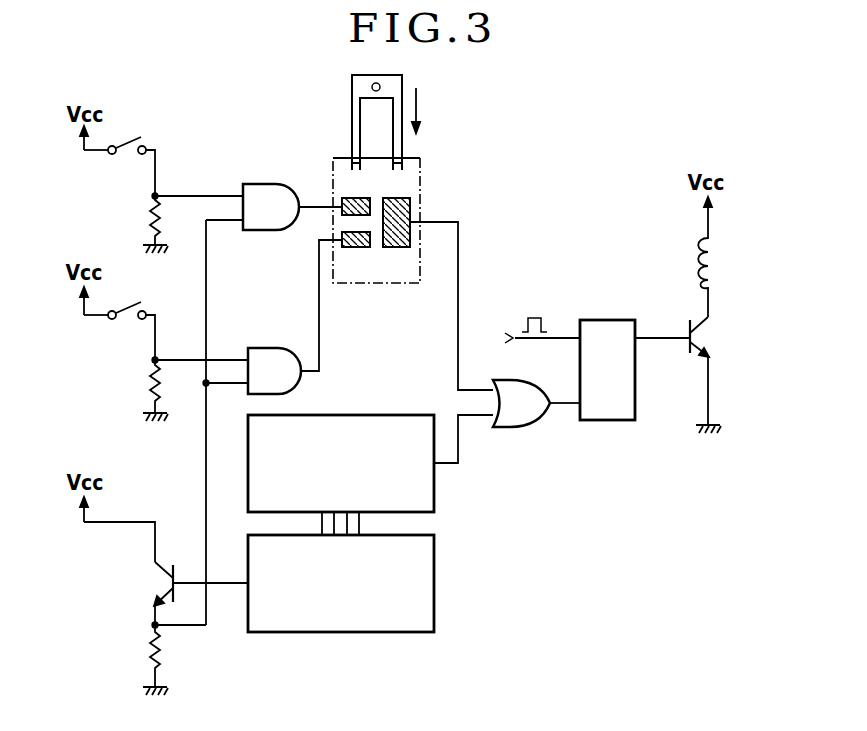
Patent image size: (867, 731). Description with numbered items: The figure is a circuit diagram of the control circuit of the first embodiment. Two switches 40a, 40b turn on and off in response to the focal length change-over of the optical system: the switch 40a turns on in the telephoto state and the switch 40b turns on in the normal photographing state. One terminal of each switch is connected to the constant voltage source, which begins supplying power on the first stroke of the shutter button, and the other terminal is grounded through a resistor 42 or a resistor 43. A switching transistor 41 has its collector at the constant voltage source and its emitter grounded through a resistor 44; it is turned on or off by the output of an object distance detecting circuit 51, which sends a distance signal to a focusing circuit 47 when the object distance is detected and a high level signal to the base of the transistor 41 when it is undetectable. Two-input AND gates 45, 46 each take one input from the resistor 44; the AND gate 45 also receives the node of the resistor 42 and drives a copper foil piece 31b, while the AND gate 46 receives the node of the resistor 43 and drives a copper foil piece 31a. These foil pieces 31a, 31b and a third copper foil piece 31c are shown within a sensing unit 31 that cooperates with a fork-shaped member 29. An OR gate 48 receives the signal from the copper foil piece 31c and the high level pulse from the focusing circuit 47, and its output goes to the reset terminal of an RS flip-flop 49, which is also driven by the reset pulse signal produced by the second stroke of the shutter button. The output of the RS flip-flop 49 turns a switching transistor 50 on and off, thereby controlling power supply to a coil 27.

The coil 27 is at (715, 265).
The fork-shaped member 29 is at (352, 90).
The photo-interrupter 31 is at (420, 178).
The copper foil piece 31a is at (357, 247).
The copper foil piece 31b is at (350, 198).
The copper foil piece 31c is at (410, 215).
The switch 40a is at (130, 305).
The switch 40b is at (130, 137).
The switching transistor 41 is at (160, 582).
The resistor 42 is at (145, 228).
The resistor 43 is at (143, 390).
The resistor 44 is at (162, 663).
The two-input AND gate 45 is at (265, 184).
The two-input AND gate 46 is at (270, 348).
The focusing circuit 47 is at (385, 415).
The OR gate 48 is at (525, 427).
The RS flip-flop 49 is at (607, 320).
The switching transistor 50 is at (705, 337).
The object distance detecting circuit 51 is at (315, 632).